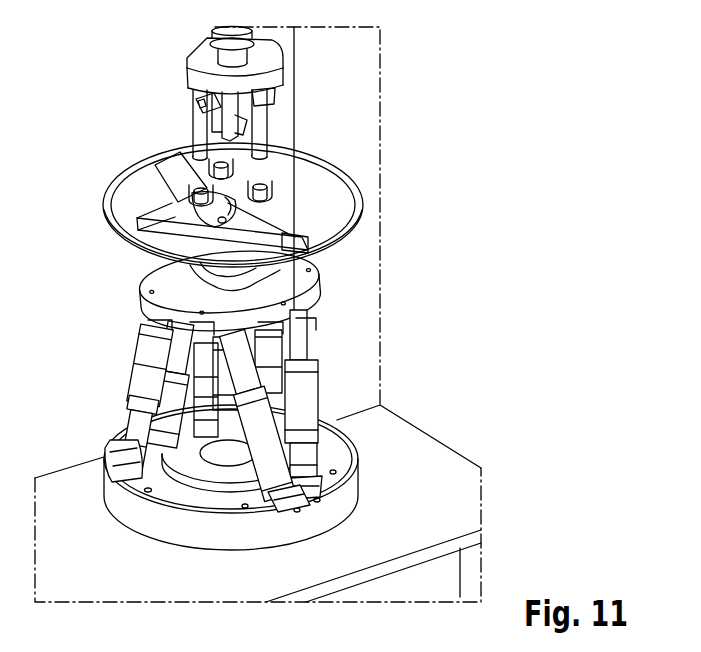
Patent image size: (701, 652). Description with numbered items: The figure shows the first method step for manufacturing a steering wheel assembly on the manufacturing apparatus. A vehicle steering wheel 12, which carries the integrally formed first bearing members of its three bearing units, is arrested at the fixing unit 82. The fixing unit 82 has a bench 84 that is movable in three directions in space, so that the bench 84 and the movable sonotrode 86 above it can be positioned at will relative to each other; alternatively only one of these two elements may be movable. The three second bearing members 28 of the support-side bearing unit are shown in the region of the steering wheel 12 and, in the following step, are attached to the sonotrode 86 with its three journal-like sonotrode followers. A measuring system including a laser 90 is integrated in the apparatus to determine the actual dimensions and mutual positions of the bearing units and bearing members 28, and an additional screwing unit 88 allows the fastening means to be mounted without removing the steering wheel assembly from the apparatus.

The vehicle steering wheel 12 is at (352, 208).
The second bearing members 28 is at (192, 187).
The fixing unit 82 is at (297, 333).
The bench 84 is at (292, 288).
The sonotrode 86 is at (262, 73).
The screwing unit 88 is at (193, 402).
The laser 90 is at (200, 105).